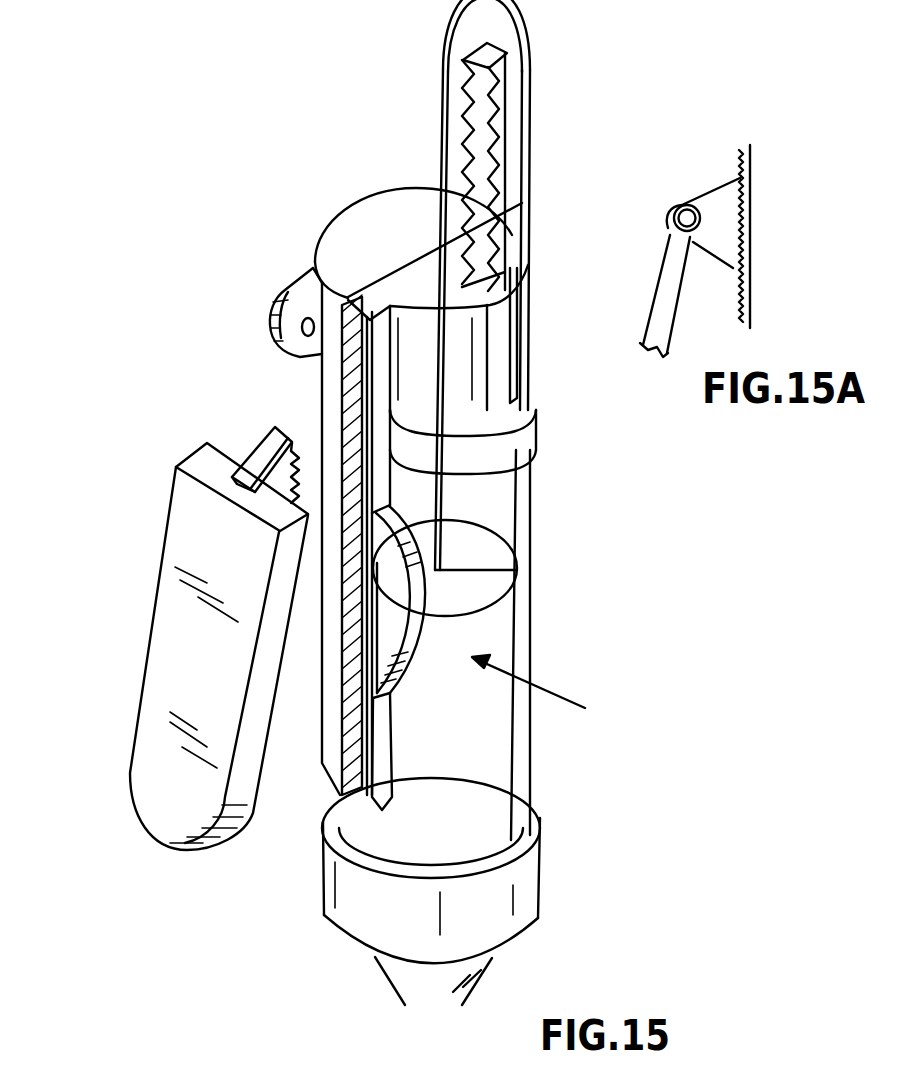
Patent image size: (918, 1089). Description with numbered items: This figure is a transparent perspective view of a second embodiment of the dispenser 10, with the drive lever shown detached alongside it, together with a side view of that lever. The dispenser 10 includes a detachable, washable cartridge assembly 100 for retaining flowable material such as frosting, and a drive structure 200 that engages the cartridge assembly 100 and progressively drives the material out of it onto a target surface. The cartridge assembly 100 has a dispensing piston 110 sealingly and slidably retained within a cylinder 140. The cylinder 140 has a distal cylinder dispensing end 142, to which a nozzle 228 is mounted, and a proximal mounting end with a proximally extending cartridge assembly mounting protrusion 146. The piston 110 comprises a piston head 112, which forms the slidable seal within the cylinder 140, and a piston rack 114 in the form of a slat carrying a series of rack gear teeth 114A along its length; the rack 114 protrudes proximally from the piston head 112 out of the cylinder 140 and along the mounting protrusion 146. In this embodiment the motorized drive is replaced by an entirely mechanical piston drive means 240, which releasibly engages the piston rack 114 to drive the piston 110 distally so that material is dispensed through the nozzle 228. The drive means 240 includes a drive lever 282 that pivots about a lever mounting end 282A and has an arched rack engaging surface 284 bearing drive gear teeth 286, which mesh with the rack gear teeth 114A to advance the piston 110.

In FIG. 15, the dispenser 10 is at (288, 118).
In FIG. 15, the cartridge assembly 100 is at (535, 512).
In FIG. 15, the dispensing piston 110 is at (513, 560).
In FIG. 15, the piston head 112 is at (533, 597).
In FIG. 15, the piston rack 114 is at (493, 100).
In FIG. 15, the rack gear teeth 114A is at (493, 177).
In FIG. 15, the cylinder 140 is at (533, 457).
In FIG. 15, the cylinder dispensing end 142 is at (533, 797).
In FIG. 15, the cartridge assembly mounting protrusion 146 is at (497, 28).
In FIG. 15, the drive structure 200 is at (355, 227).
In FIG. 15, the nozzle 228 is at (480, 983).
In FIG. 15, the piston drive mechanism 240 is at (231, 261).
In FIG. 15, the drive lever 282 is at (177, 637).
In FIG. 15, the lever mounting end 282A is at (173, 493).
In FIG. 15A, the lever mounting end 282A is at (675, 254).
In FIG. 15, the arched rack engaging surface 284 is at (203, 457).
In FIG. 15A, the arched rack engaging surface 284 is at (733, 258).
In FIG. 15, the drive gear teeth 286 is at (298, 452).
In FIG. 15A, the drive gear teeth 286 is at (743, 230).